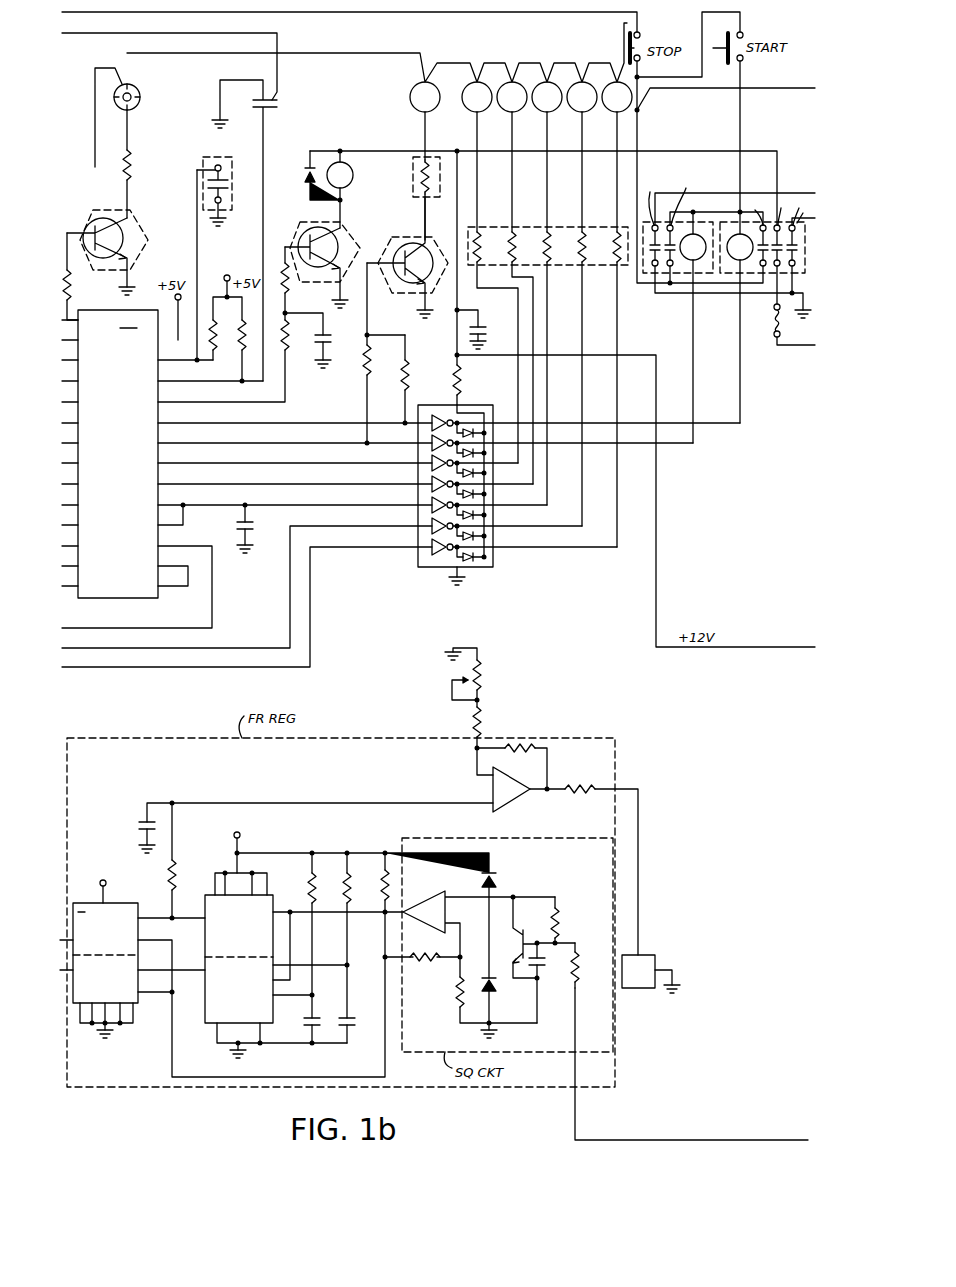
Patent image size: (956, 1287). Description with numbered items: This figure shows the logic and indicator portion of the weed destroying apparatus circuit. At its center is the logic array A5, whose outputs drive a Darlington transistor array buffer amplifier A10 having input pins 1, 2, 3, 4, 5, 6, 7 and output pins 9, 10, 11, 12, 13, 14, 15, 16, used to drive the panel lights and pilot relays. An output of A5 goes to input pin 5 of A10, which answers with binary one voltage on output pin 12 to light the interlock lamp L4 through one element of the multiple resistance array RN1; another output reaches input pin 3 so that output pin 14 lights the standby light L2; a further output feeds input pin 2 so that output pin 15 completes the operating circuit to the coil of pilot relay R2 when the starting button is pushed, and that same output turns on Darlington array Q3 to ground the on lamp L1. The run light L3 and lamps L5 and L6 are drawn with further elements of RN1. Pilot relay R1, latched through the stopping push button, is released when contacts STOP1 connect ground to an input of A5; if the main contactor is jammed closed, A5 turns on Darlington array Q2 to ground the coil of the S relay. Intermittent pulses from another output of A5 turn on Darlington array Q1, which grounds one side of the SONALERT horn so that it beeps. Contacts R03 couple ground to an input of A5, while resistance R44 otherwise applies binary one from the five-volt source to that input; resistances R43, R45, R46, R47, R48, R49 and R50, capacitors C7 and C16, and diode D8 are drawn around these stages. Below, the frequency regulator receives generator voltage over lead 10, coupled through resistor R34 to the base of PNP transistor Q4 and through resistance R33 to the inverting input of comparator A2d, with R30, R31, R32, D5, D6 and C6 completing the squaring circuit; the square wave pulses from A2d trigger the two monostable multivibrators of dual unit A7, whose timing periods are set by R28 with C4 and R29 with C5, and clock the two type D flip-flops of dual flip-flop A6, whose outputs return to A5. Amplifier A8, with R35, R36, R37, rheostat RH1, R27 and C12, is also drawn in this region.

The inverter 1 of driver A10 1 is at (414, 424).
The input pin 2 is at (414, 444).
The input pin 3 is at (414, 464).
The inverter 4 of driver A10 4 is at (414, 485).
The input pin 5 is at (414, 506).
The inverter 6 of driver A10 6 is at (414, 527).
The inverter 7 of driver A10 7 is at (414, 548).
The pull-up resistor 9 is at (463, 398).
The lead 10 is at (494, 552).
The output 11 to lamp L5 11 is at (494, 529).
The output pin 12 is at (494, 508).
The output 13 to lamp L3 13 is at (494, 487).
The output pin 14 is at (494, 466).
The output pin 15 is at (494, 446).
The output 16 to relay R1 16 is at (494, 426).
The logic array A5 is at (110, 454).
The flip-flop pair A6 is at (138, 1005).
The precision dual monostable multivibrator A7 is at (208, 1018).
The amplifier A8 is at (513, 802).
The Darlington transistor array buffer amplifier A10 is at (430, 566).
The comparator A2d is at (428, 926).
The Darlington transistor array Q1 is at (135, 222).
The Darlington transistor array Q2 is at (345, 230).
The Darlington transistor array Q3 is at (410, 296).
The PNP transistor Q4 is at (516, 937).
The pilot relay R1 is at (767, 308).
The pilot relay R2 is at (729, 308).
The on light L1 is at (425, 161).
The standby light L2 is at (490, 272).
The run light L3 is at (515, 283).
The interlock light L4 is at (547, 293).
The lamp L5 is at (582, 304).
The lamp L6 is at (617, 314).
The multiple resistance array RN1 is at (489, 224).
The relay contacts R03 is at (229, 258).
The resistor R27 is at (175, 873).
The timing resistor R28 is at (308, 885).
The timing resistor R29 is at (350, 872).
The resistor R30 is at (391, 887).
The resistor R31 is at (424, 972).
The resistor R32 is at (456, 1002).
The resistance R33 is at (562, 922).
The resistor R34 is at (578, 962).
The resistor R35 is at (582, 785).
The resistor R36 is at (521, 748).
The resistor R37 is at (486, 716).
The resistor R43 is at (71, 278).
The resistance R44 is at (209, 318).
The resistor R45 is at (236, 352).
The resistor R46 is at (239, 357).
The resistor R47 is at (288, 290).
The resistor R48 is at (133, 163).
The resistor R49 is at (362, 375).
The resistor R50 is at (391, 380).
The potentiometer RH1 is at (486, 669).
The timing capacitor C4 is at (316, 1021).
The timing capacitor C5 is at (350, 1021).
The capacitor C6 is at (541, 980).
The capacitor C7 is at (327, 345).
The capacitor C12 is at (138, 829).
The capacitor C16 is at (236, 528).
The diode D5 is at (498, 880).
The diode D6 is at (493, 995).
The diode D8 is at (307, 178).
The relay S is at (340, 189).
The horn SONALERT is at (132, 86).
The stop contacts STOP1 is at (268, 230).